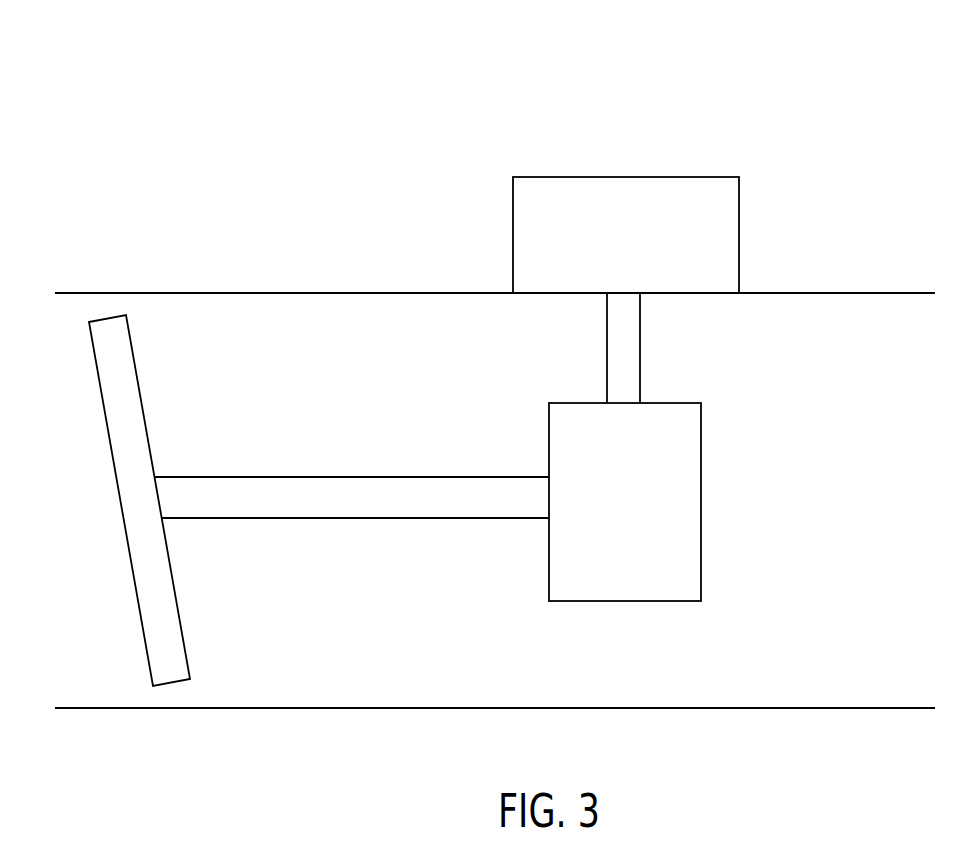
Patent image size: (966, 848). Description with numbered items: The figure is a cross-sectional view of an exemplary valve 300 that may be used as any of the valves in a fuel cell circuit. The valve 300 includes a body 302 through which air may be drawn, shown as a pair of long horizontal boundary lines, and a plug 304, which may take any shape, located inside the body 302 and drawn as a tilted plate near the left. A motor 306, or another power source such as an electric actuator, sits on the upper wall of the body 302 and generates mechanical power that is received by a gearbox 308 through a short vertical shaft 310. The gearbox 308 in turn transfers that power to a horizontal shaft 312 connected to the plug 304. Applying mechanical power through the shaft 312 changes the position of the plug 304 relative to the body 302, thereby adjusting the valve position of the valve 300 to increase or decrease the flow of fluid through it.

The valve 300 is at (277, 93).
The body 302 is at (178, 292).
The plug 304 is at (102, 398).
The motor 306 is at (623, 177).
The gearbox 308 is at (701, 505).
The shaft 310 is at (641, 357).
The shaft 312 is at (362, 519).